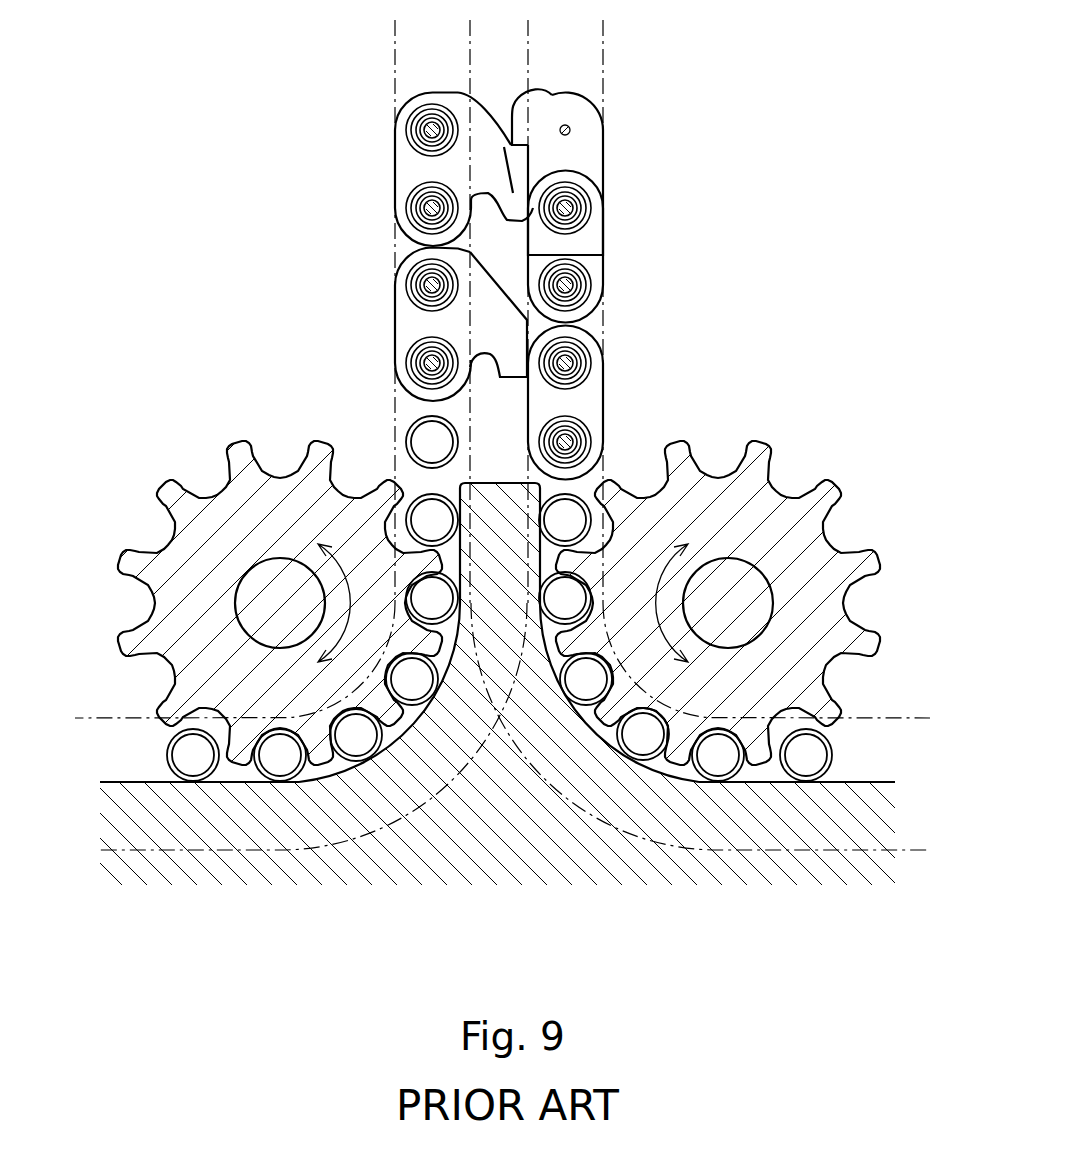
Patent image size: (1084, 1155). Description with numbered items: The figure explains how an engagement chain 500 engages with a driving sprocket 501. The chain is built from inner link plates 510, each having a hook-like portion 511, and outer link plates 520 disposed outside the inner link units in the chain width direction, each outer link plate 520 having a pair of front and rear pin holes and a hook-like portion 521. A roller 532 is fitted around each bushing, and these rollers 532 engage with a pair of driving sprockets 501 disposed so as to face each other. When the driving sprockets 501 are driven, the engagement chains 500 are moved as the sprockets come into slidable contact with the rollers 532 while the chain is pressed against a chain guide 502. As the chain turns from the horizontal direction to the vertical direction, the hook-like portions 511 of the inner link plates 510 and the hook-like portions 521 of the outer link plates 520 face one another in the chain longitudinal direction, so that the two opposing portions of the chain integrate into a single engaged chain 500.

The engagement chain 500 is at (499, 397).
The driving sprocket 501 is at (220, 517).
The chain guide 502 is at (668, 818).
The inner link plate 510 is at (600, 134).
The hook-like portion 511 is at (523, 100).
The outer link plate 520 is at (407, 163).
The hook-like portion 521 is at (510, 143).
The roller 532 is at (405, 425).